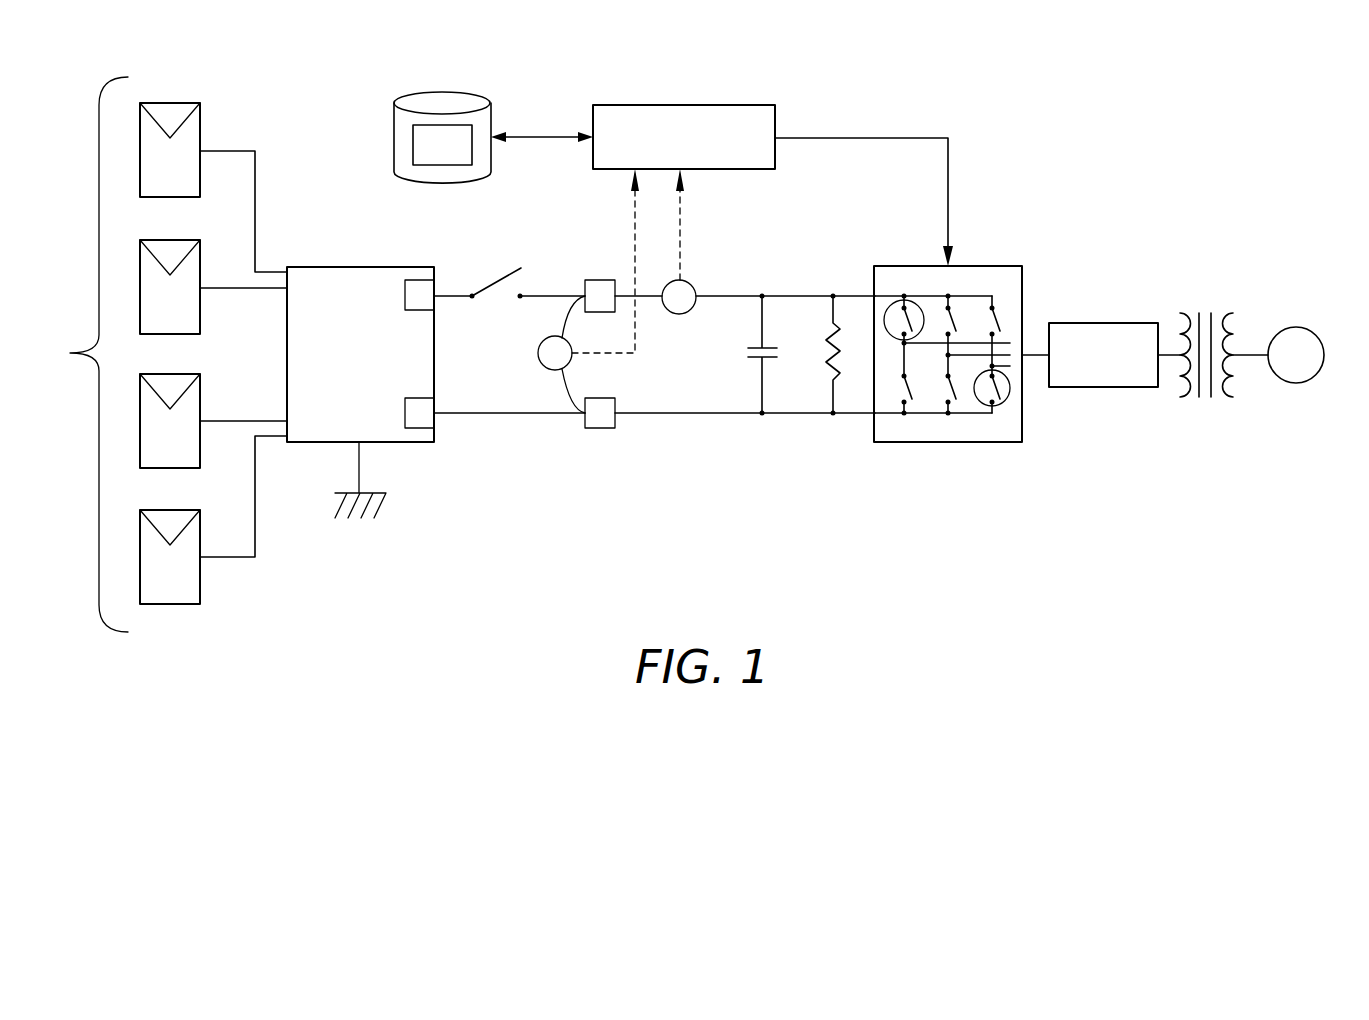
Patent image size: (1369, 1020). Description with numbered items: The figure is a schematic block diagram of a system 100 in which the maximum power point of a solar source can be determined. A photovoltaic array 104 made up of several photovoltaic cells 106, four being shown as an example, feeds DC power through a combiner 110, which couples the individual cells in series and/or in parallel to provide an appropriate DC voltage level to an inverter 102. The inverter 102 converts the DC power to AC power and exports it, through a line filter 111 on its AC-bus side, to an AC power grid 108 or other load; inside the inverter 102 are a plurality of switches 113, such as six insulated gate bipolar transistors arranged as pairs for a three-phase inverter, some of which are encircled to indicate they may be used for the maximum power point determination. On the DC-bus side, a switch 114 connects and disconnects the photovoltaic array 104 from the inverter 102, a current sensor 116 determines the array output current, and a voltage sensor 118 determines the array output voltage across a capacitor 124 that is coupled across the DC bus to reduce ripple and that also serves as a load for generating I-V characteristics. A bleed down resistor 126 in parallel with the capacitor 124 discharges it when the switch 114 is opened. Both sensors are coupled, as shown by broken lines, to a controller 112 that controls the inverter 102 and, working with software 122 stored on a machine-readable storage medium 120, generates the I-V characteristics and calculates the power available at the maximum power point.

The system 100 is at (556, 538).
The inverter 102 is at (1022, 292).
The photovoltaic array 104 is at (165, 354).
The photovoltaic cell 106 is at (200, 583).
The AC power grid 108 is at (1297, 327).
The combiner 110 is at (360, 267).
The line filter 111 is at (1103, 387).
The controller 112 is at (775, 117).
The switches 113 is at (1005, 400).
The switch 114 is at (492, 283).
The current sensor 116 is at (692, 285).
The voltage sensor 118 is at (538, 350).
The machine-readable storage medium 120 is at (445, 107).
The software 122 is at (443, 165).
The capacitor 124 is at (763, 344).
The bleed down resistor 126 is at (826, 363).